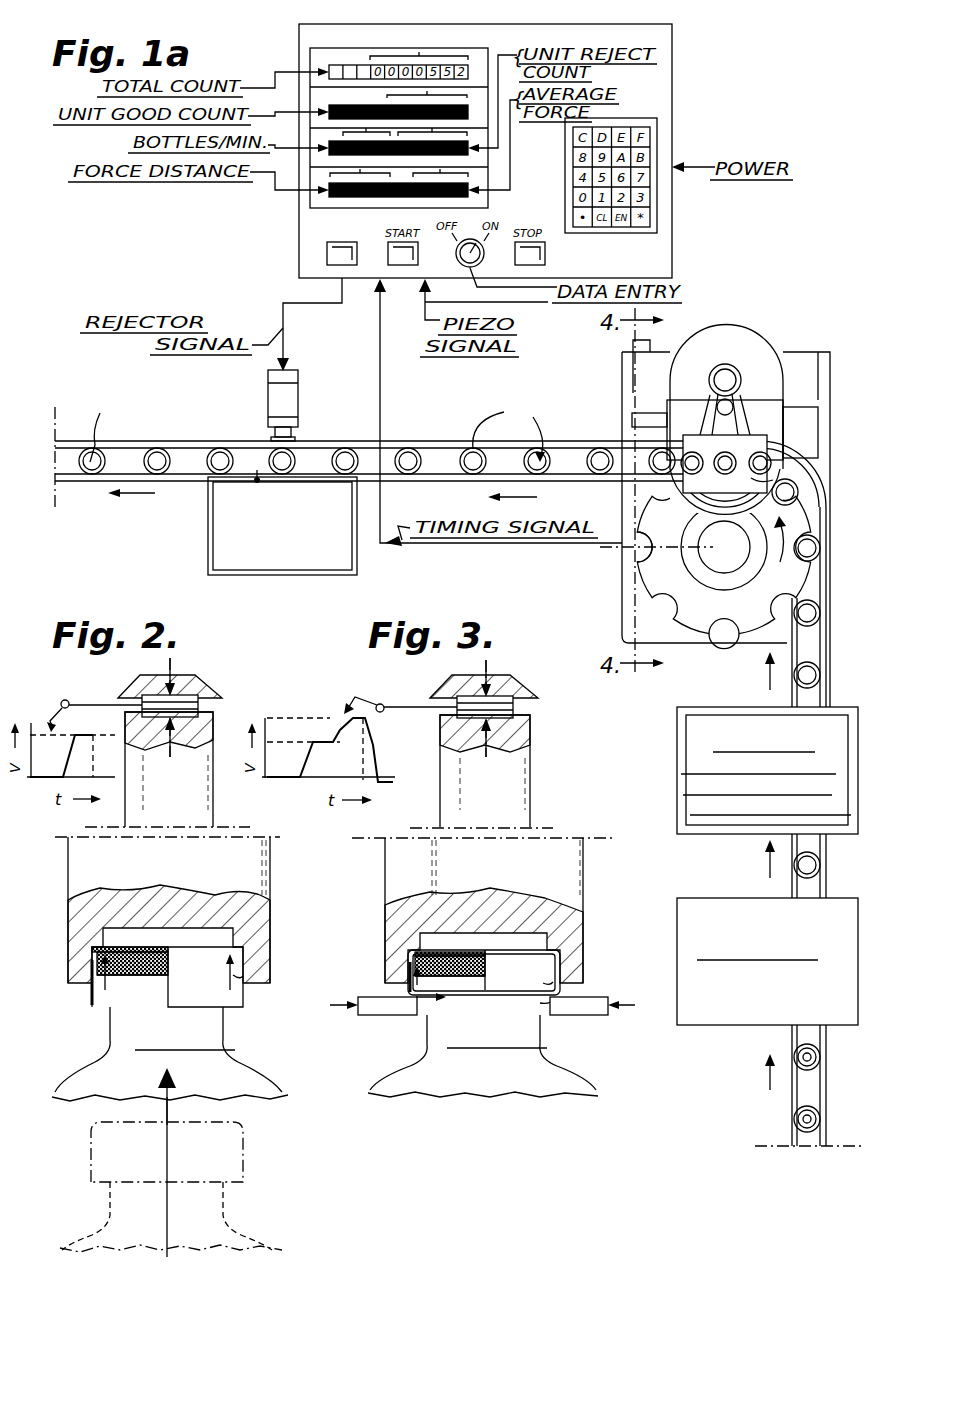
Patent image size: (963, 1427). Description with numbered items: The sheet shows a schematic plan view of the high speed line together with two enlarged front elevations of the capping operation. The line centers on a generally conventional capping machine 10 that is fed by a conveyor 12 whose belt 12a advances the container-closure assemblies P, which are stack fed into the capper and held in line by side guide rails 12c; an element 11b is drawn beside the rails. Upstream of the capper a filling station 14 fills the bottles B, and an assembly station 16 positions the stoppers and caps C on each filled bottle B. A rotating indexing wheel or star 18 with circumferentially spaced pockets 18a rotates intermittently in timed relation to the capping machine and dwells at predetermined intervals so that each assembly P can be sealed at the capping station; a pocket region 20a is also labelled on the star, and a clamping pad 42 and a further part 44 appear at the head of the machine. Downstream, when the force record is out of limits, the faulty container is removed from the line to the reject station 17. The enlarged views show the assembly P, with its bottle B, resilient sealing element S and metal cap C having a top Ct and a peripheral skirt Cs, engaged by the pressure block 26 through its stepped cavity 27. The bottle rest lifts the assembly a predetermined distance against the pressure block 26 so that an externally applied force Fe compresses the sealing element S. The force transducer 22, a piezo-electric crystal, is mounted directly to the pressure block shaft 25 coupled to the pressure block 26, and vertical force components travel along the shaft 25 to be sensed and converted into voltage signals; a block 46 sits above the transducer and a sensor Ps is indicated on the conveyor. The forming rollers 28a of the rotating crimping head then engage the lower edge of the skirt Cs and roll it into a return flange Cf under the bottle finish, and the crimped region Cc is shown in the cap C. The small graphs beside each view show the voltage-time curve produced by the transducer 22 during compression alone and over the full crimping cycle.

In FIG. 1A, the capping machine 10 is at (780, 336).
In FIG. 1A, the conveyor guide 11b is at (91, 424).
In FIG. 1A, the conveyor 12 is at (782, 846).
In FIG. 1A, the belt 12a is at (820, 661).
In FIG. 1A, the side guide rails 12c is at (140, 441).
In FIG. 1A, the filling station 14 is at (710, 1020).
In FIG. 1A, the assembly station 16 is at (678, 712).
In FIG. 1A, the reject station 17 is at (292, 531).
In FIG. 1A, the rotating indexing wheel or star 18 is at (652, 600).
In FIG. 1A, the circumferentially spaced pockets 18a is at (717, 634).
In FIG. 1A, the star wheel pocket 20a is at (638, 580).
In FIG. 2, the force transducer 22 is at (188, 700).
In FIG. 3, the force transducer 22 is at (503, 702).
In FIG. 2, the pressure block shaft 25 is at (212, 813).
In FIG. 3, the pressure block shaft 25 is at (530, 813).
In FIG. 2, the pressure block 26 is at (52, 875).
In FIG. 3, the pressure block 26 is at (370, 875).
In FIG. 2, the stepped cavity 27 is at (236, 976).
In FIG. 3, the stepped cavity 27 is at (547, 984).
In FIG. 3, the forming discs or rollers 28a is at (383, 1010).
In FIG. 1A, the clamping pad 42 is at (768, 444).
In FIG. 1A, the gripper jaw 44 is at (755, 483).
In FIG. 2, the press block 46 is at (148, 695).
In FIG. 3, the press block 46 is at (462, 696).
In FIG. 1A, the bottle B is at (821, 868).
In FIG. 2, the bottle B is at (313, 1092).
In FIG. 3, the bottle B is at (520, 1135).
In FIG. 1A, the metal cap C is at (828, 676).
In FIG. 2, the metal cap C is at (290, 1008).
In FIG. 3, the metal cap C is at (622, 971).
In FIG. 3, the cap crimp Cc is at (530, 1037).
In FIG. 3, the return flange Cf is at (546, 1003).
In FIG. 2, the peripheral skirt Cs is at (92, 990).
In FIG. 3, the peripheral skirt Cs is at (412, 963).
In FIG. 2, the top Ct is at (140, 946).
In FIG. 3, the top Ct is at (452, 948).
In FIG. 2, the externally applied force Fe is at (171, 1177).
In FIG. 1A, the container-closure assembly P is at (813, 608).
In FIG. 2, the container-closure assembly P is at (200, 943).
In FIG. 3, the container-closure assembly P is at (518, 940).
In FIG. 1A, the position sensor Ps is at (530, 430).
In FIG. 2, the resilient sealing element S is at (150, 1040).
In FIG. 3, the resilient sealing element S is at (466, 1020).